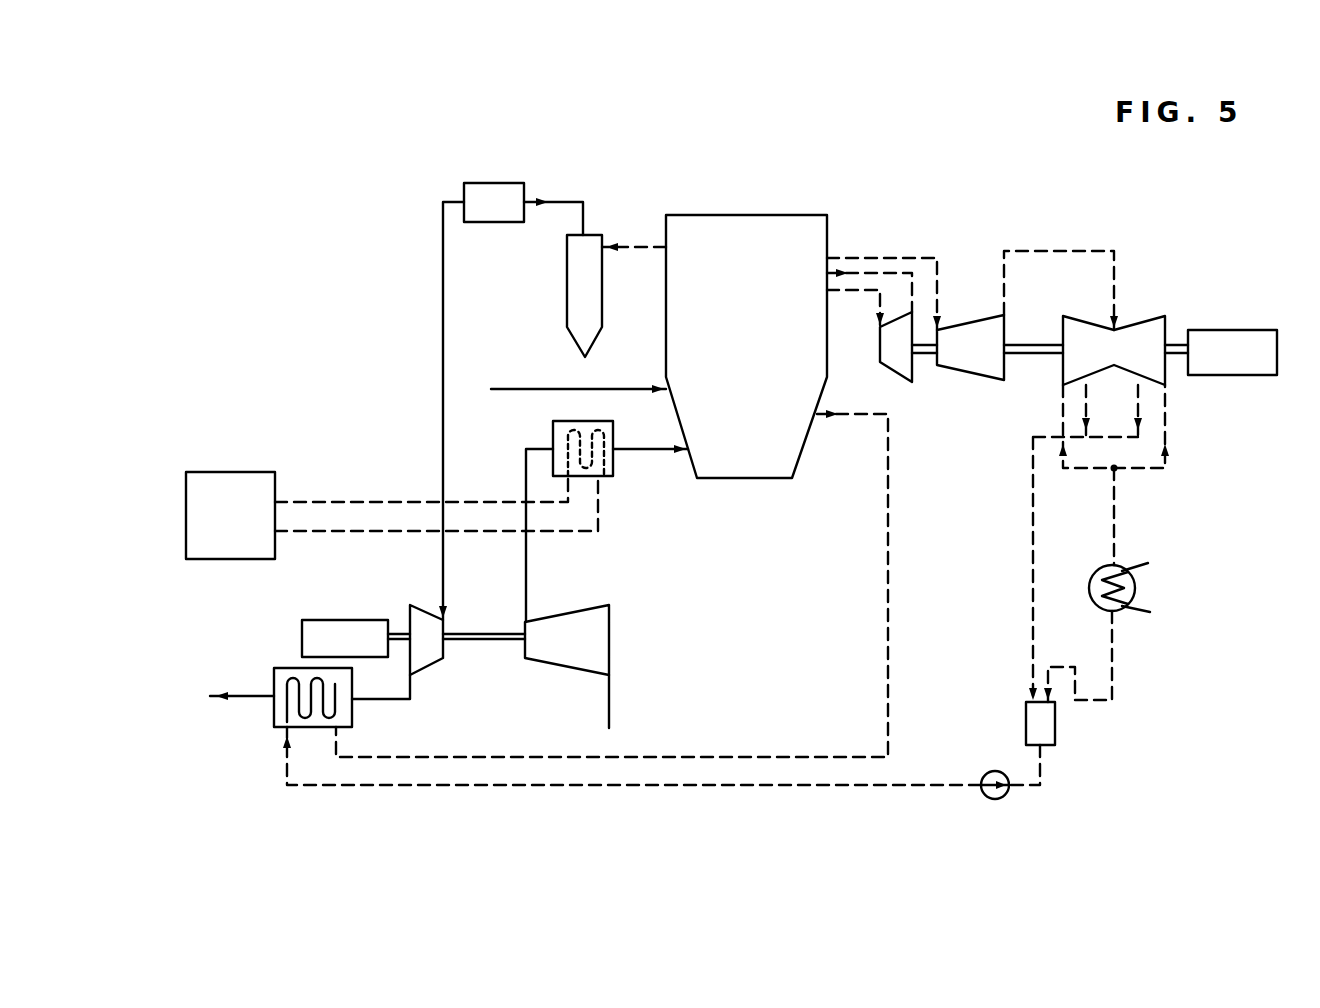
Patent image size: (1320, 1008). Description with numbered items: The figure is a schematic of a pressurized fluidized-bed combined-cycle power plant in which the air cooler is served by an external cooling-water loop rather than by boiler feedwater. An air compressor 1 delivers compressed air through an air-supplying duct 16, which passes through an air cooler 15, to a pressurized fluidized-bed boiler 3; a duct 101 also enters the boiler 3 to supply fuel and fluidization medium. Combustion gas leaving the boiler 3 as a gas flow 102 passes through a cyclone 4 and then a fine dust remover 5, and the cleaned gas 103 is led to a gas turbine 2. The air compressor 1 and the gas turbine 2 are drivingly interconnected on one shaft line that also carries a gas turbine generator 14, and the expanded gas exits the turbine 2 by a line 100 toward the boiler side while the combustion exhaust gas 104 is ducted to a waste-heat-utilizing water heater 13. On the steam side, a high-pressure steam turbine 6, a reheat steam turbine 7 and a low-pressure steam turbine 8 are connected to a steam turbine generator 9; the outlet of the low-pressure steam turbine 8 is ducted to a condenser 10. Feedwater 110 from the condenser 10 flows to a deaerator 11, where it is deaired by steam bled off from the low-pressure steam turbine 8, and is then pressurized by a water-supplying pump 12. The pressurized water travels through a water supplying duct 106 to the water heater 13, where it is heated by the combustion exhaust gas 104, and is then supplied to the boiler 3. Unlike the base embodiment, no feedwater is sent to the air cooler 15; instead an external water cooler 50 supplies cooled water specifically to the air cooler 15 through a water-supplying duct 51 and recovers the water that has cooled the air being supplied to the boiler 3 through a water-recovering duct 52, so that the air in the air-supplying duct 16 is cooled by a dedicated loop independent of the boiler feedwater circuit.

The air compressor 1 is at (562, 665).
The gas turbine 2 is at (428, 612).
The pressurized fluidized-bed boiler 3 is at (810, 232).
The cyclone 4 is at (567, 272).
The fine dust remover 5 is at (494, 183).
The high-pressure steam turbine 6 is at (893, 370).
The reheat steam turbine 7 is at (973, 320).
The low-pressure steam turbine 8 is at (1142, 320).
The steam turbine generator 9 is at (1230, 330).
The condenser 10 is at (1136, 588).
The deaerator 11 is at (1055, 735).
The water-supplying pump 12 is at (995, 800).
The water heater 13 is at (274, 715).
The gas turbine generator 14 is at (302, 640).
The air cooler 15 is at (553, 432).
The air-supplying duct 16 is at (528, 572).
The external water cooler 50 is at (232, 472).
The water-supplying duct 51 is at (348, 531).
The water-recovering duct 52 is at (368, 502).
The exhaust gas line 100 is at (611, 728).
The duct 101 is at (502, 389).
The combustion gas line 102 is at (638, 247).
The clean gas line 103 is at (443, 316).
The combustion exhaust gas 104 is at (412, 690).
The water supplying duct 106 is at (789, 788).
The feedwater 110 is at (1112, 655).